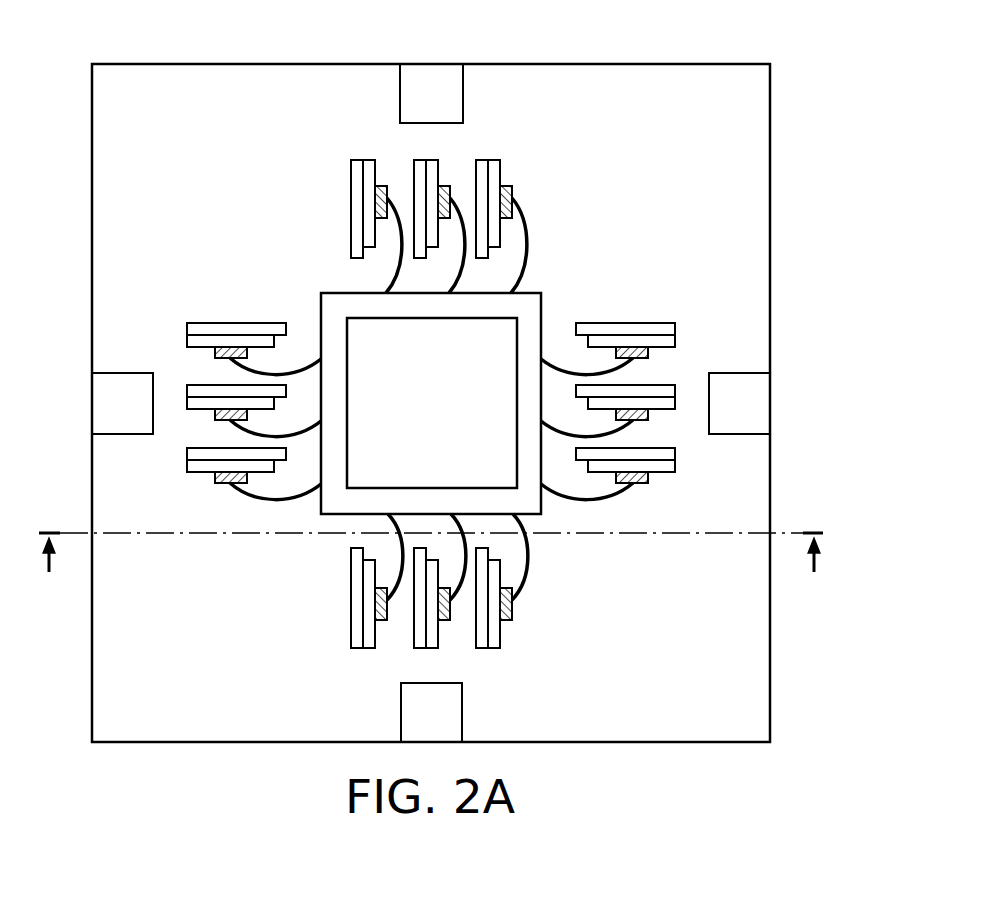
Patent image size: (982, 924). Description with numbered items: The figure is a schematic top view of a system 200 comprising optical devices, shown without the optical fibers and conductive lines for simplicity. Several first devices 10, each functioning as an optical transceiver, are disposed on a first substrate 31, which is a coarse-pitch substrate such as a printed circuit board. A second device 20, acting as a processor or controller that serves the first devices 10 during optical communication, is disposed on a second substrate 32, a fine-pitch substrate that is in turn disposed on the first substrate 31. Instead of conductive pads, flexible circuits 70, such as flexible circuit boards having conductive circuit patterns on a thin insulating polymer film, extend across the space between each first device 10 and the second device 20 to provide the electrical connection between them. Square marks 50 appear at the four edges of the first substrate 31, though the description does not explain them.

The system 200 is at (895, 38).
The first substrate 31 is at (755, 729).
The alignment marks 50 is at (446, 110).
The second device 20 is at (446, 420).
The second substrate 32 is at (534, 308).
The first device 10 is at (540, 203).
The flexible circuit 70 is at (528, 245).